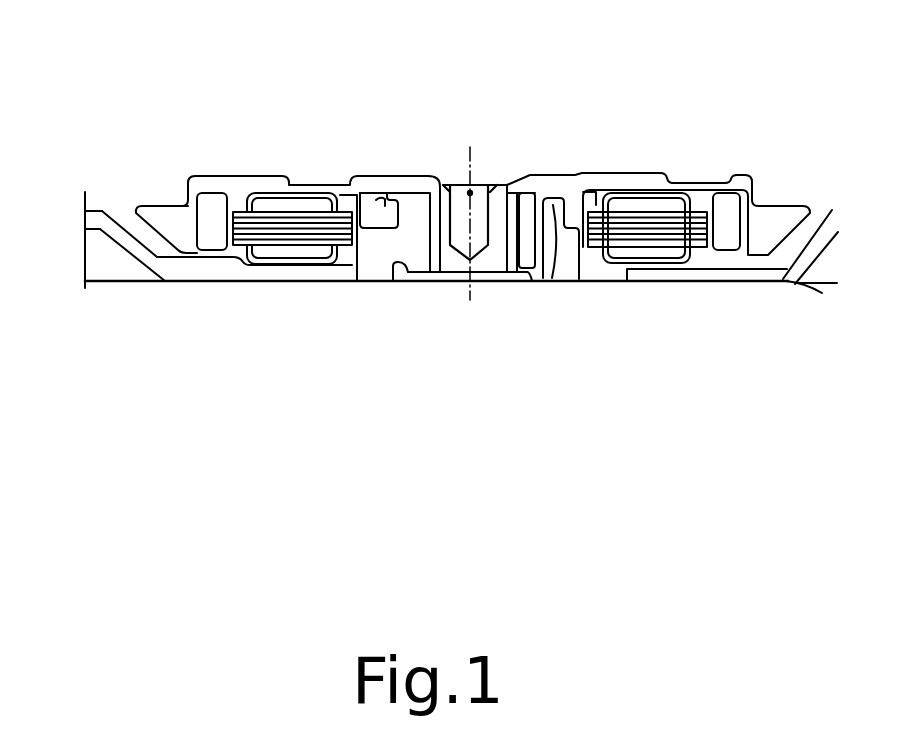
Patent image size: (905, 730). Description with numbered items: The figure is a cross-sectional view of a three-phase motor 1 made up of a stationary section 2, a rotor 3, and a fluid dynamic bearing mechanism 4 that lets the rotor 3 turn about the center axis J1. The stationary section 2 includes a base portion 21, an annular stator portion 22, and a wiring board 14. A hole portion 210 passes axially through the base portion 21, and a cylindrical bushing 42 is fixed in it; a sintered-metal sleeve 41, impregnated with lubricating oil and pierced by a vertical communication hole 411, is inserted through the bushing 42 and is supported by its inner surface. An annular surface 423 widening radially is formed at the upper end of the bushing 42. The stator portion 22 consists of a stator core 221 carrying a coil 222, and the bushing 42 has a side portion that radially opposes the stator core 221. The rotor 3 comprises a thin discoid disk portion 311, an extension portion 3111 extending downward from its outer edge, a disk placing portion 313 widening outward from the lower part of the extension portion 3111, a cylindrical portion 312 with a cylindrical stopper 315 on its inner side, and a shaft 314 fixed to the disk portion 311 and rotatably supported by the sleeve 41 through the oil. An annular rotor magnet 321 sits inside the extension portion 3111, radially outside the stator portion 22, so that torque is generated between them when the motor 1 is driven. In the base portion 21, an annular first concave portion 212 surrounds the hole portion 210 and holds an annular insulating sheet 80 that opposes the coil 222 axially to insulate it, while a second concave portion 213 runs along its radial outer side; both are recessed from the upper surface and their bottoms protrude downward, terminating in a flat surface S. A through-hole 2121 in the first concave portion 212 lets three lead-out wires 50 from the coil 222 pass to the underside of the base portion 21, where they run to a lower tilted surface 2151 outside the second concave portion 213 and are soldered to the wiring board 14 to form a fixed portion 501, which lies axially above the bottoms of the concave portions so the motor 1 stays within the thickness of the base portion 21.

The motor 1 is at (64, 29).
The stationary section 2 is at (125, 381).
The rotor 3 is at (95, 75).
The bearing mechanism 4 is at (374, 347).
The wiring board 14 is at (635, 272).
The base portion 21 is at (100, 205).
The stator portion 22 is at (243, 196).
The sleeve 41 is at (405, 265).
The bushing 42 is at (373, 275).
The lead-out wire 50 is at (622, 247).
The insulating sheet 80 is at (253, 264).
The hole portion 210 is at (350, 263).
The first concave portion 212 is at (238, 266).
The second concave portion 213 is at (150, 266).
The stator core 221 is at (341, 190).
The coil 222 is at (305, 192).
The disk portion 311 is at (325, 175).
The cylindrical portion 312 is at (365, 204).
The disk placing portion 313 is at (152, 200).
The shaft 314 is at (500, 190).
The stopper 315 is at (383, 192).
The rotor magnet 321 is at (212, 195).
The communication hole 411 is at (528, 192).
The annular surface 423 is at (575, 257).
The fixed portion 501 is at (790, 283).
The through-hole 2121 is at (657, 271).
The lower tilted surface 2151 is at (837, 190).
The extension portion 3111 is at (183, 206).
The center axis J1 is at (470, 147).
The flat surface S is at (708, 282).